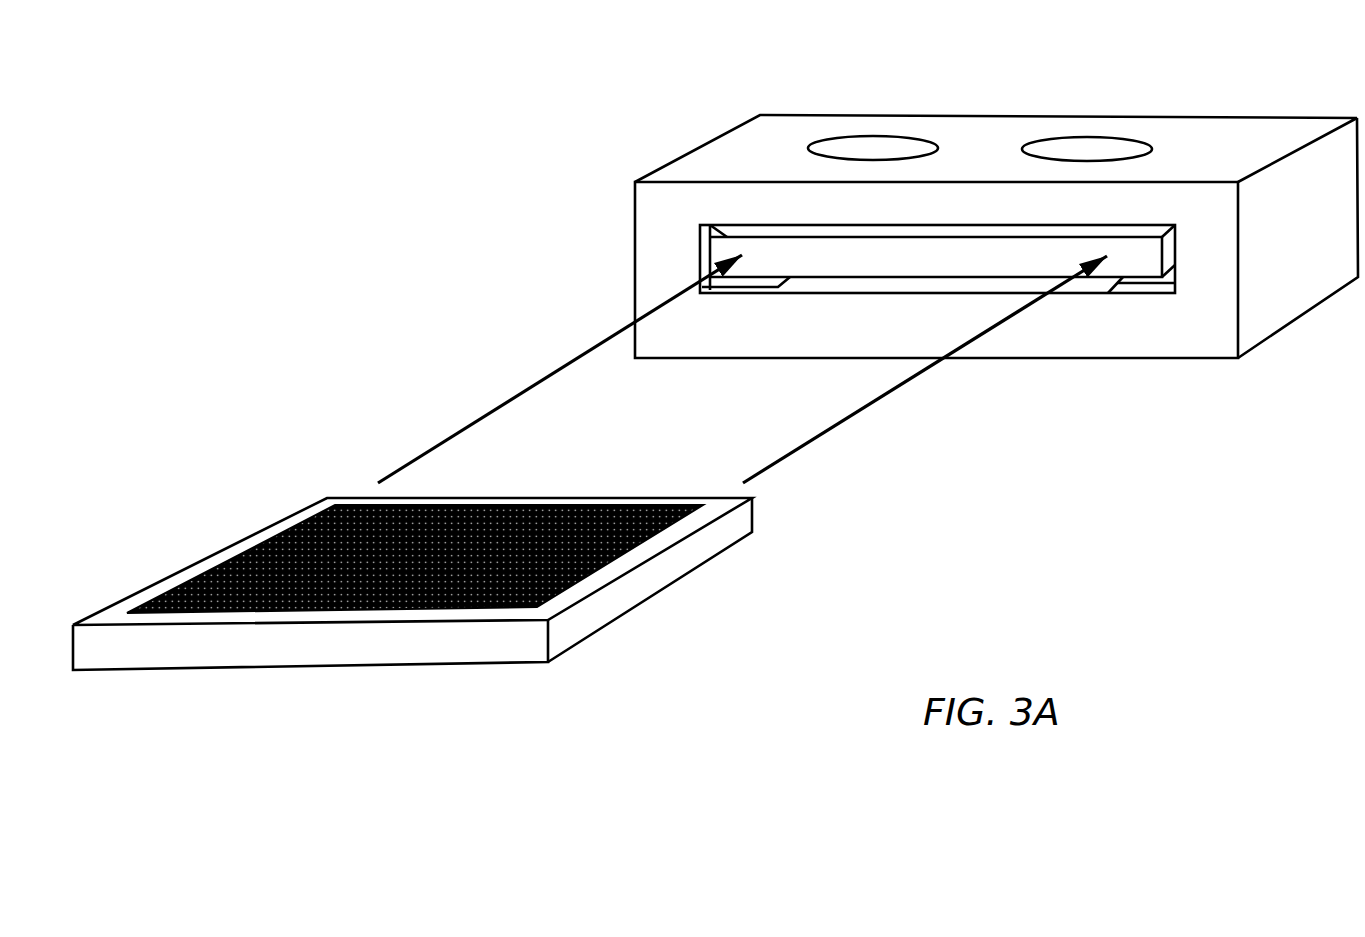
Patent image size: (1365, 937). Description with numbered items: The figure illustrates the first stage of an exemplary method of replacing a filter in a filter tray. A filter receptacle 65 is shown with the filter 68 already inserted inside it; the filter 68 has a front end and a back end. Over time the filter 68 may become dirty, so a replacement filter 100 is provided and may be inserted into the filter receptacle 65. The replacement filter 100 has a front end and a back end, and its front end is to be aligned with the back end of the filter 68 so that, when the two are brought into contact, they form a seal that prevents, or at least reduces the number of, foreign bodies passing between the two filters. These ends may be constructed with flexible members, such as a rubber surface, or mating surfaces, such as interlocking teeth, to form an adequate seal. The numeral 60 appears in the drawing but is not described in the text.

The reader / docking unit 60 is at (507, 95).
The filter receptacle 65 is at (853, 293).
The filter 68 is at (1137, 277).
The replacement filter 100 is at (465, 619).